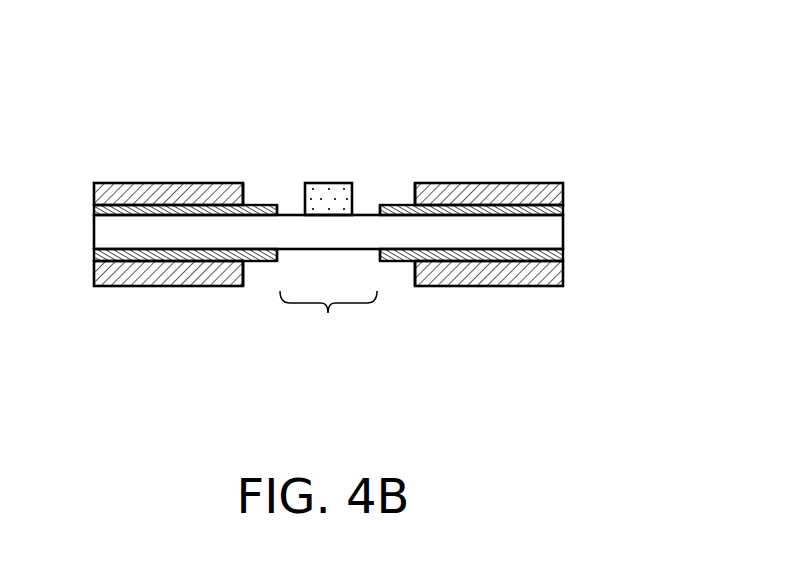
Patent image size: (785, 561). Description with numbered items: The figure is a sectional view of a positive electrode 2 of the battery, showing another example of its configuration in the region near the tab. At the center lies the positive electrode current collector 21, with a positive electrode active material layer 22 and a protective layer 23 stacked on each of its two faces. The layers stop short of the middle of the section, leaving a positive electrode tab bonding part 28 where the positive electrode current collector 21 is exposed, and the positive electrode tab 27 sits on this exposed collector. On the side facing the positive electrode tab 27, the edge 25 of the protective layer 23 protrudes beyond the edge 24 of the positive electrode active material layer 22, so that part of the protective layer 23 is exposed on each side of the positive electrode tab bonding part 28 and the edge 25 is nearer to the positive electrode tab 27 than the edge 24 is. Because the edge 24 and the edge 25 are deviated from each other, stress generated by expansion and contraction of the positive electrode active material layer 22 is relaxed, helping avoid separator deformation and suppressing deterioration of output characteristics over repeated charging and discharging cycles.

The positive electrode 2 is at (63, 58).
The positive electrode current collector 21 is at (565, 237).
The positive electrode active material layer 22 is at (190, 192).
The protective layer 23 is at (128, 210).
The edge of the positive electrode active material layer 24 is at (247, 206).
The edge of the protective layer 25 is at (283, 210).
The positive electrode tab 27 is at (318, 183).
The positive electrode tab bonding part 28 is at (328, 323).